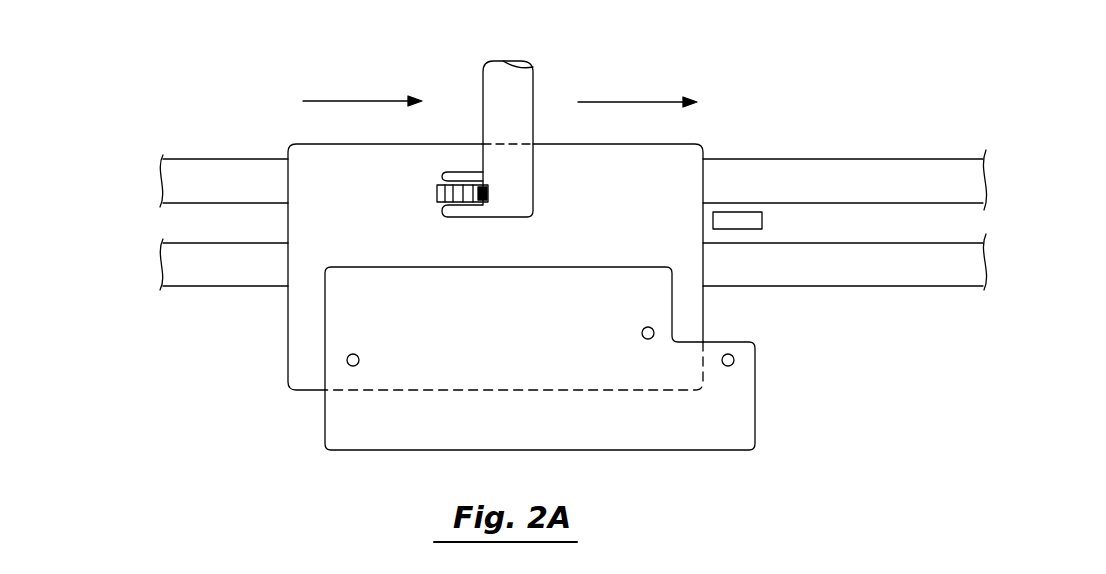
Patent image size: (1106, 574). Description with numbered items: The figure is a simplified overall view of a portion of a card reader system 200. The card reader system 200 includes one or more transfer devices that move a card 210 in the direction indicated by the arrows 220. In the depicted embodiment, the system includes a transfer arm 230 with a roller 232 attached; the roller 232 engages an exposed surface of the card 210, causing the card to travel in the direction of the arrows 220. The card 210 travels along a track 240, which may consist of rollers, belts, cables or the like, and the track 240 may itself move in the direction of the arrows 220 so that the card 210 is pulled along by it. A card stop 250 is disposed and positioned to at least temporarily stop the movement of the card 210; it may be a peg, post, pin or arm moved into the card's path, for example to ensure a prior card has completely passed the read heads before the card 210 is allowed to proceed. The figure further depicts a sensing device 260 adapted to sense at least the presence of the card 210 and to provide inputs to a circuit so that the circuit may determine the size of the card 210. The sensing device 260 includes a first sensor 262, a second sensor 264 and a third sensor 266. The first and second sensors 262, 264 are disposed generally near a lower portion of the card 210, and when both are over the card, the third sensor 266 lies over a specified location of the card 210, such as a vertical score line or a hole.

The card reader system 200 is at (747, 125).
The card 210 is at (645, 195).
The arrows 220 is at (337, 100).
The transfer arm 230 is at (522, 90).
The roller 232 is at (437, 191).
The track 240 is at (952, 185).
The card stop 250 is at (762, 220).
The sensing device 260 is at (537, 433).
The first sensor 262 is at (359, 357).
The second sensor 264 is at (726, 367).
The third sensor 266 is at (642, 333).